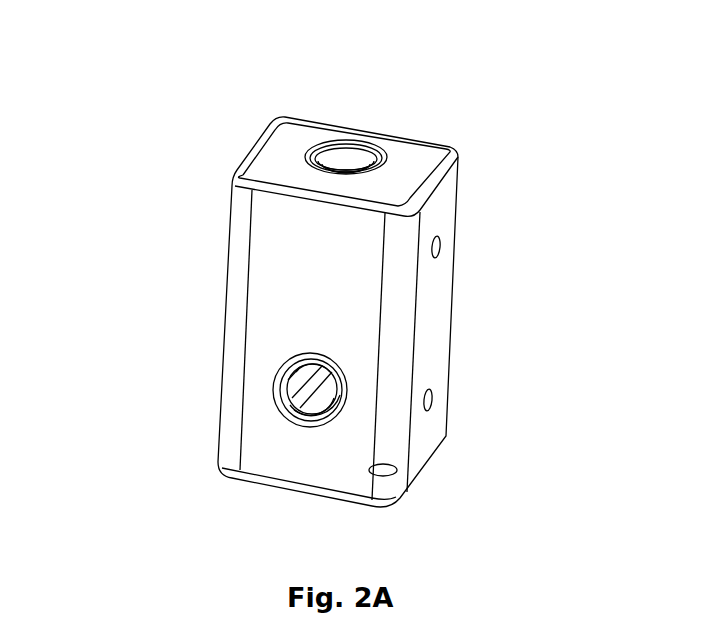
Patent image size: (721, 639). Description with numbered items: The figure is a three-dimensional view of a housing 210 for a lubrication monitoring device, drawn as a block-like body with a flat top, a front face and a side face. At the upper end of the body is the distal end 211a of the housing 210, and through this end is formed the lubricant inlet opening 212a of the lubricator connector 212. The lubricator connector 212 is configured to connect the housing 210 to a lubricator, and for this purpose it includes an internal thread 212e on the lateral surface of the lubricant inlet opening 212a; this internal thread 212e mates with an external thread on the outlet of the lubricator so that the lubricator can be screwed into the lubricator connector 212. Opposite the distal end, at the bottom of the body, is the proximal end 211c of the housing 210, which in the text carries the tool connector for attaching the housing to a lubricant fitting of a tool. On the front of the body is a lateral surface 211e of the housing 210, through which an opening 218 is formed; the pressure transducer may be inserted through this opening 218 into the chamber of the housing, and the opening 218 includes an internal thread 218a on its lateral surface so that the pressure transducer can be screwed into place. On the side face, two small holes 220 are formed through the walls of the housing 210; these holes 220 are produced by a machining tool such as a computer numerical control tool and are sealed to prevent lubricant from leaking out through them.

The housing 210 is at (118, 28).
The distal end 211a is at (402, 148).
The proximal end 211c is at (344, 497).
The lateral surface 211e is at (280, 293).
The lubricator connector 212 is at (372, 54).
The lubricant inlet opening 212a is at (343, 141).
The internal thread 212e is at (312, 153).
The opening 218 is at (317, 384).
The internal thread 218a is at (274, 390).
The holes 220 is at (432, 398).